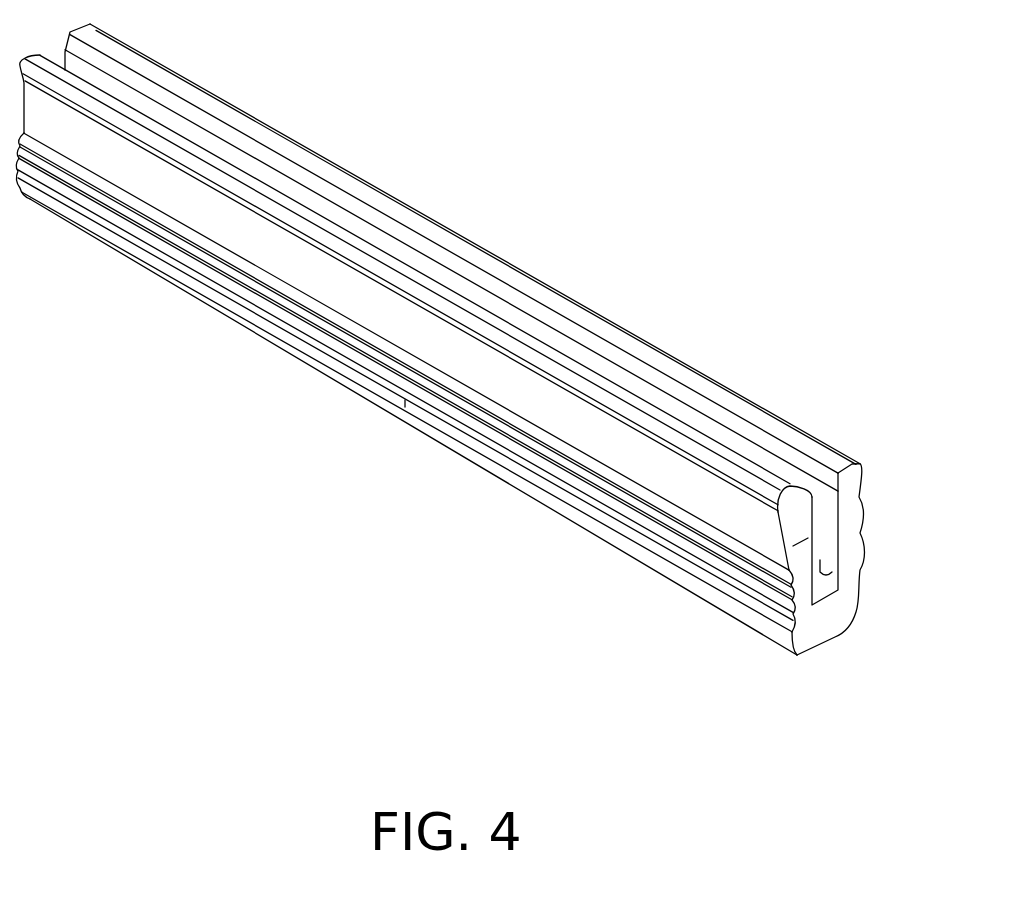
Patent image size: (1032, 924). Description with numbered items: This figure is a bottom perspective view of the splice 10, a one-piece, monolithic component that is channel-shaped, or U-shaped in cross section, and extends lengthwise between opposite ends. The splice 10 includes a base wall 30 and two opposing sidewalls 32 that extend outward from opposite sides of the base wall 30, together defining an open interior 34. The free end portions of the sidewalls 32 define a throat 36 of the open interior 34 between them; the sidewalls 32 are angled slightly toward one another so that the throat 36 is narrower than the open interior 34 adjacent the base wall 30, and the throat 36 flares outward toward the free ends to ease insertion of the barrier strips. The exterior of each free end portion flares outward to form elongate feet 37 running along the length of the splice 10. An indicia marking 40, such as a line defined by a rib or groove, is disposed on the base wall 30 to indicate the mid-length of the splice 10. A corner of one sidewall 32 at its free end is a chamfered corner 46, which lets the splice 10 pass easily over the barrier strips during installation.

The splice 10 is at (590, 144).
The base wall 30 is at (823, 617).
The sidewalls 32 is at (850, 517).
The open interior 34 is at (840, 567).
The throat 36 is at (807, 467).
The elongate feet 37 is at (733, 390).
The indicia marking 40 is at (405, 401).
The chamfered corner 46 is at (790, 635).